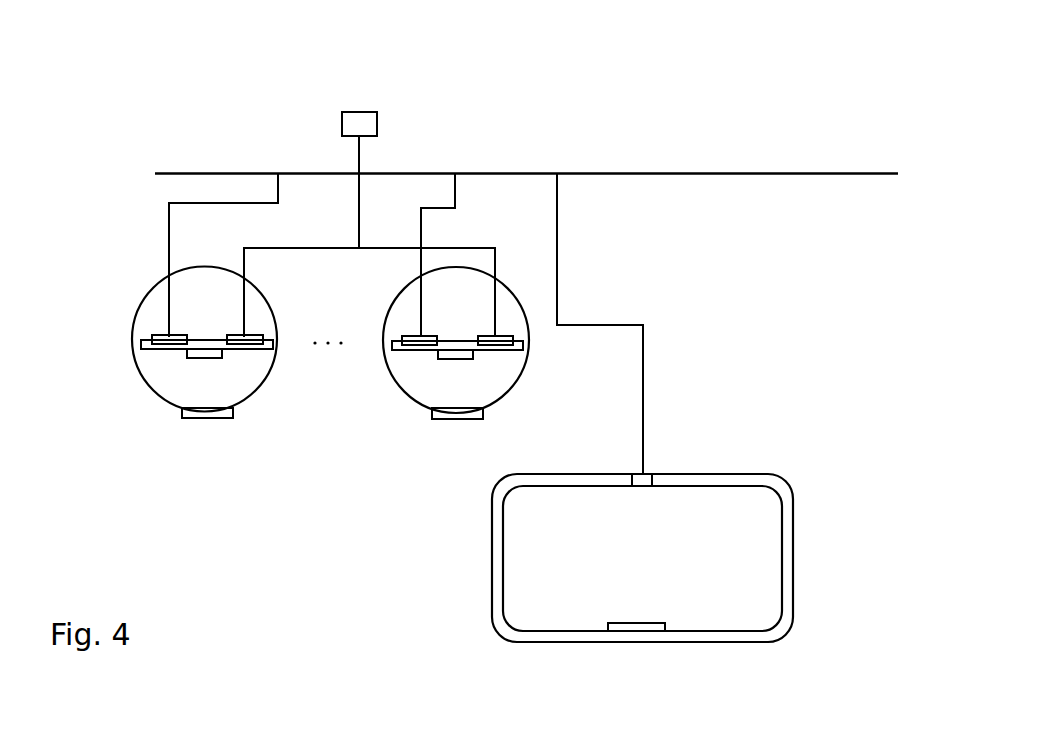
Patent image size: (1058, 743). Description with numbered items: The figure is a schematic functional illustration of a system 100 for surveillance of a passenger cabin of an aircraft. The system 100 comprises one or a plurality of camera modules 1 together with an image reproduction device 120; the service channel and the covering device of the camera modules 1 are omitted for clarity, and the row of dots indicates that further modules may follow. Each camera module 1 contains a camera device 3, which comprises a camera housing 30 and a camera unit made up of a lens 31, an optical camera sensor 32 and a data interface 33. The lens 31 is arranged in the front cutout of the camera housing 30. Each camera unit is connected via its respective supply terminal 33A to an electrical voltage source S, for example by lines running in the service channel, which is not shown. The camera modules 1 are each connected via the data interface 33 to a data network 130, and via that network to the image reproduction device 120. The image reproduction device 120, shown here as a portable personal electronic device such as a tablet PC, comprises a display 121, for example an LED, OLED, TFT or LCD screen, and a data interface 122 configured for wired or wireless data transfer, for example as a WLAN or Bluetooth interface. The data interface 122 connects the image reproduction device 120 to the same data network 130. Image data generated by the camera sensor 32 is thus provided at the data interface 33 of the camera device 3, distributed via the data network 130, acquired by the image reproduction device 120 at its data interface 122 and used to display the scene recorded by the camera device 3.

The system 100 is at (226, 83).
The data network 130 is at (652, 172).
The electrical voltage source S is at (358, 112).
The camera module 1 is at (110, 270).
The camera device 3 is at (140, 418).
The camera housing 30 is at (277, 310).
The lens 31 is at (233, 413).
The camera sensor 32 is at (208, 358).
The data interface 33 is at (165, 336).
The supply terminal 33A is at (238, 335).
The image reproduction device 120 is at (492, 580).
The display 121 is at (783, 545).
The data interface 122 is at (643, 482).